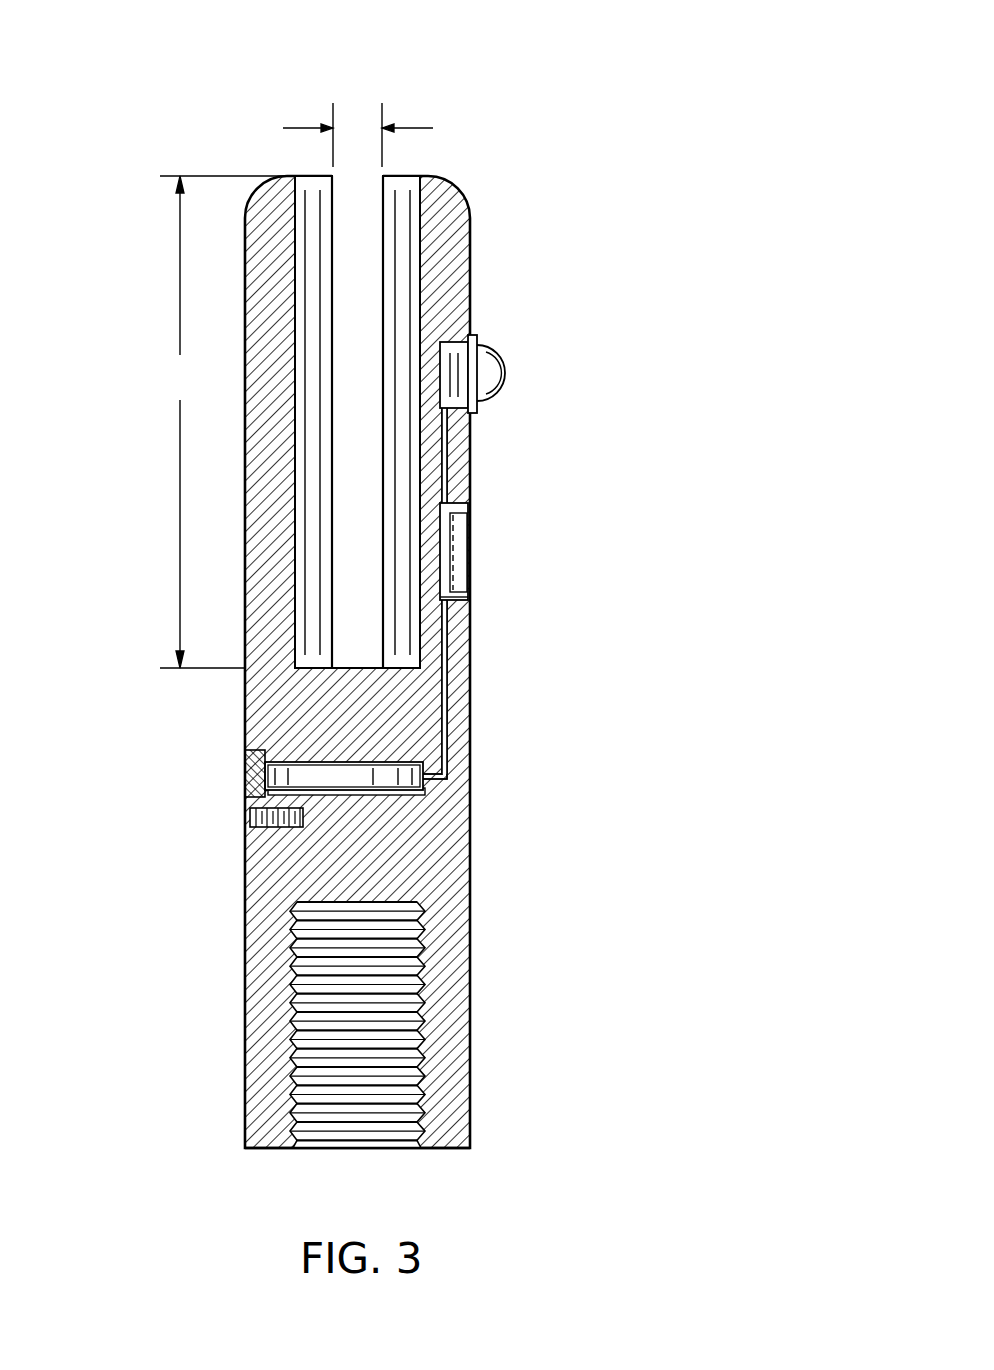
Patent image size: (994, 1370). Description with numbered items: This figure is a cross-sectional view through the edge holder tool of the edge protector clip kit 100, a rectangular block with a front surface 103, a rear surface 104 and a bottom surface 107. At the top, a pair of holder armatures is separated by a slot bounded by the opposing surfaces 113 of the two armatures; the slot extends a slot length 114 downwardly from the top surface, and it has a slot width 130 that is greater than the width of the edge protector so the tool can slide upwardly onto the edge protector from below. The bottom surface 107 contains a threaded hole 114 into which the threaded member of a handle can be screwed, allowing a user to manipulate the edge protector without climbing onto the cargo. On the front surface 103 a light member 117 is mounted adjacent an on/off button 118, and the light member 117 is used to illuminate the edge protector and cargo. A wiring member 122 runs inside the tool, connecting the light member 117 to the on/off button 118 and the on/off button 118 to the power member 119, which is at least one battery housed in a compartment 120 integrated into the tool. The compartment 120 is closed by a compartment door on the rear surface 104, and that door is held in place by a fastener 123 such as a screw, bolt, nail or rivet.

The edge protector clip kit 100 is at (625, 81).
The front surface 103 is at (472, 876).
The rear surface 104 is at (245, 953).
The bottom surface 107 is at (268, 1148).
The opposing surfaces 113 is at (383, 217).
The slot length 114 is at (490, 1188).
The light member 117 is at (496, 372).
The on/off button 118 is at (470, 547).
The power member 119 is at (395, 773).
The compartment 120 is at (245, 773).
The wiring member 122 is at (443, 440).
The fastener 123 is at (245, 817).
The slot width 130 is at (386, 135).